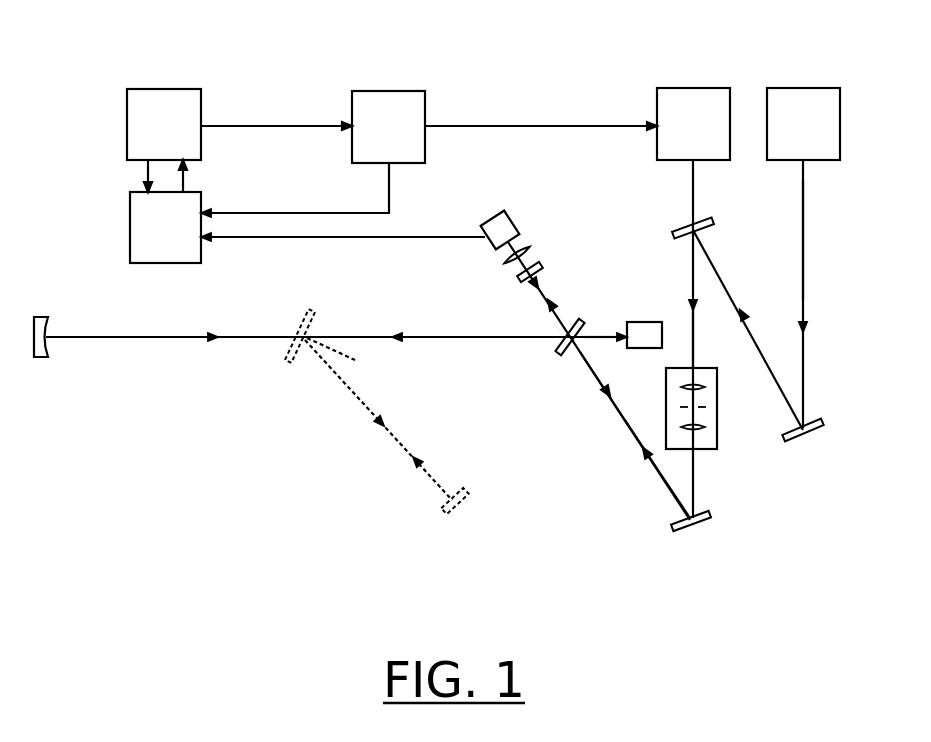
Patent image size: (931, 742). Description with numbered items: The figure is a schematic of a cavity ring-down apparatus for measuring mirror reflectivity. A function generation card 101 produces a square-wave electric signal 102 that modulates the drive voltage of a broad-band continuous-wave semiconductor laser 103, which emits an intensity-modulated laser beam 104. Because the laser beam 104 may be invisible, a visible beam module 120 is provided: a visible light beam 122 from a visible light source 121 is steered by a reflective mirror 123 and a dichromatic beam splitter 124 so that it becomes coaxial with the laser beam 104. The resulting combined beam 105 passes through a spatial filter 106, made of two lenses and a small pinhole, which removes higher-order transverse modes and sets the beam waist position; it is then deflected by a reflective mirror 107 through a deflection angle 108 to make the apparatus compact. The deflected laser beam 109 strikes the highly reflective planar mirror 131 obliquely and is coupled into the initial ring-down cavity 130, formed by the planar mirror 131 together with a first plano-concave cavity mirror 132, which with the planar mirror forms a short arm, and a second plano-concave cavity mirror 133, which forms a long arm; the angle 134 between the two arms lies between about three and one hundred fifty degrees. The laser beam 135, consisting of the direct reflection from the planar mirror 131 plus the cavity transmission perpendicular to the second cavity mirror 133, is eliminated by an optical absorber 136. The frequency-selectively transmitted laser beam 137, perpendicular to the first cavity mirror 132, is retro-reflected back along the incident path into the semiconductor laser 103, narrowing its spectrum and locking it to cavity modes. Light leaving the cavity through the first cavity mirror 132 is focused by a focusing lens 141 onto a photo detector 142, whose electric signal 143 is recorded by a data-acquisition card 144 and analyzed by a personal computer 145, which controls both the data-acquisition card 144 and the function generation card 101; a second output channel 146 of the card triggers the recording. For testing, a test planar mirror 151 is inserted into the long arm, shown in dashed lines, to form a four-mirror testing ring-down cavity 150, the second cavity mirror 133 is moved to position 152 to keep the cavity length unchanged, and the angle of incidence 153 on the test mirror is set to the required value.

The function generation card 101 is at (388, 91).
The square-wave electric signal 102 is at (565, 126).
The semiconductor laser 103 is at (693, 88).
The laser beam 104 is at (693, 190).
The combined beam 105 is at (697, 308).
The spatial filter 106 is at (705, 450).
The reflective mirror 107 is at (695, 528).
The deflection angle 108 is at (680, 490).
The deflected laser beam 109 is at (643, 447).
The visible beam module 120 is at (868, 210).
The visible light source 121 is at (803, 88).
The visible light beam 122 is at (803, 258).
The reflective mirror 123 is at (805, 438).
The dichromatic beam splitter 124 is at (713, 224).
The initial ring-down cavity 130 is at (160, 380).
The planar mirror 131 is at (550, 354).
The first plano-concave cavity mirror 132 is at (542, 268).
The second plano-concave cavity mirror 133 is at (42, 358).
The angle between two arms 134 is at (553, 326).
The laser beam 135 is at (604, 340).
The optical absorber 136 is at (645, 322).
The frequency-selectively transmitted laser beam 137 is at (611, 397).
The focusing lens 141 is at (530, 250).
The photo detector 142 is at (505, 215).
The electric signal 143 is at (352, 237).
The data-acquisition card 144 is at (130, 236).
The personal computer 145 is at (127, 130).
The output channel 146 is at (283, 213).
The four-mirror testing ring-down cavity 150 is at (388, 470).
The test planar mirror 151 is at (298, 318).
The position 152 is at (462, 503).
The angle of incidence 153 is at (337, 345).